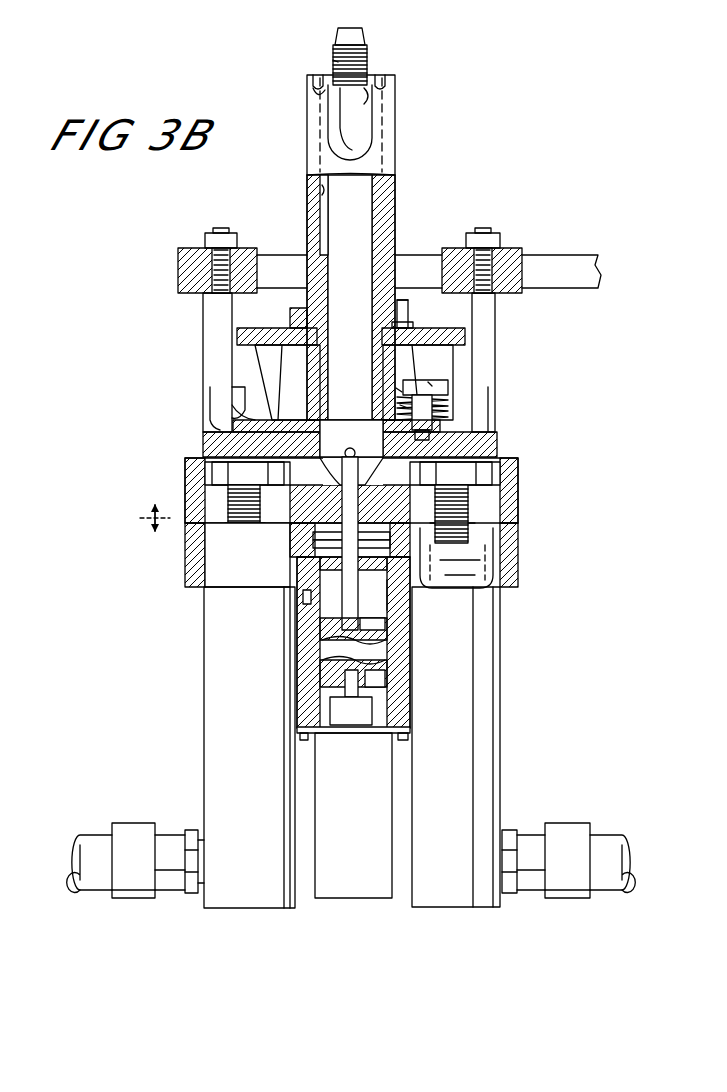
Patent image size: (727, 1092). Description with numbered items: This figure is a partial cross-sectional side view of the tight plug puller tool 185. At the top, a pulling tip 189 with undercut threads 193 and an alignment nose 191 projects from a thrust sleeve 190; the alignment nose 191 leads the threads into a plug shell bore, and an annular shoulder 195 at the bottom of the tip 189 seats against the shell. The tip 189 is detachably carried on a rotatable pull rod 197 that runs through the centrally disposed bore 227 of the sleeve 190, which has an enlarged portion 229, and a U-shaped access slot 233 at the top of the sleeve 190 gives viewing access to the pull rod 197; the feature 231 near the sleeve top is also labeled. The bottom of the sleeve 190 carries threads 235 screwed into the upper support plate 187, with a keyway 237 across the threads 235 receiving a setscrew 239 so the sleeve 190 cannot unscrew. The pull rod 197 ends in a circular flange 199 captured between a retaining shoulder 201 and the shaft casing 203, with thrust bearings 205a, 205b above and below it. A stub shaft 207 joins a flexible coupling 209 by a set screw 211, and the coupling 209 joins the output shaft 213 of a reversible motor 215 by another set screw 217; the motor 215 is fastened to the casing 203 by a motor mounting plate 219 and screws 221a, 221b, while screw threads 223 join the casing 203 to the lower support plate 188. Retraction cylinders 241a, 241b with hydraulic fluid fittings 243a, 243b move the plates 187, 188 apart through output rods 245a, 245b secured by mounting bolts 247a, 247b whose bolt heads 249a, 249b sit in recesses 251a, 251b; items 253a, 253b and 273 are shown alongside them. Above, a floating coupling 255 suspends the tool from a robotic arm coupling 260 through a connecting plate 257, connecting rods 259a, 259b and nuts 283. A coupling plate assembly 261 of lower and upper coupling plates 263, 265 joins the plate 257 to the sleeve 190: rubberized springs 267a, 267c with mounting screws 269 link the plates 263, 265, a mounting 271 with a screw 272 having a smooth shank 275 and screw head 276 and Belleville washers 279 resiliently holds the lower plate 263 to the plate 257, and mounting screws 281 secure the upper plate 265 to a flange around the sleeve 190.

The tight plug puller tool 185 is at (150, 250).
The upper support plate 187 is at (190, 495).
The lower support plate 188 is at (195, 560).
The pulling tip 189 is at (370, 52).
The thrust sleeve 190 is at (397, 145).
The alignment nose 191 is at (367, 30).
The undercut threads 193 is at (335, 60).
The annular shoulder 195 is at (368, 100).
The rotatable pull rod 197 is at (363, 198).
The circular flange 199 is at (405, 595).
The retaining shoulder 201 is at (378, 495).
The shaft casing 203 is at (400, 655).
The thrust bearing 205a is at (340, 537).
The thrust bearing 205b is at (345, 545).
The stub shaft 207 is at (345, 630).
The flexible coupling 209 is at (335, 668).
The set screw 211 is at (385, 625).
The output shaft 213 is at (352, 705).
The reversible motor 215 is at (353, 815).
The set screw 217 is at (380, 682).
The motor mounting plate 219 is at (357, 735).
The screw 221a is at (300, 736).
The screw 221b is at (405, 740).
The screw threads 223 is at (318, 605).
The centrally disposed bore 227 is at (378, 303).
The enlarged portion 229 is at (322, 194).
The notch 231 is at (318, 78).
The U-shaped access slot 233 is at (338, 130).
The threads 235 is at (351, 439).
The keyway 237 is at (238, 440).
The setscrew 239 is at (248, 474).
The retraction cylinder 241a is at (249, 747).
The retraction cylinder 241b is at (456, 747).
The hydraulic fluid fitting 243a is at (136, 895).
The hydraulic fluid fitting 243b is at (575, 895).
The output rod 245a is at (228, 530).
The output rod 245b is at (478, 533).
The mounting bolt 247a is at (215, 462).
The mounting bolt 247b is at (497, 462).
The bolt head 249a is at (222, 473).
The bolt head 249b is at (472, 475).
The recess 251a is at (228, 515).
The recess 251b is at (480, 487).
The left seat 253a is at (228, 510).
The right seat 253b is at (478, 508).
The floating coupling 255 is at (281, 325).
The connecting plate 257 is at (450, 443).
The connecting rod 259a is at (213, 325).
The connecting rod 259b is at (488, 352).
The robotic arm coupling 260 is at (568, 262).
The coupling plate assembly 261 is at (268, 350).
The lower coupling plate 263 is at (243, 398).
The upper coupling plate 265 is at (462, 338).
The rubberized spring 267a is at (296, 397).
The rubberized spring 267c is at (450, 375).
The mounting screw 269 is at (232, 425).
The mounting 271 is at (403, 380).
The screw 272 is at (430, 384).
The plunger 273 is at (435, 420).
The smooth shank 275 is at (405, 407).
The screw head 276 is at (452, 395).
The Belleville washers 279 is at (400, 390).
The mounting screws 281 is at (409, 306).
The nuts 283 is at (205, 248).